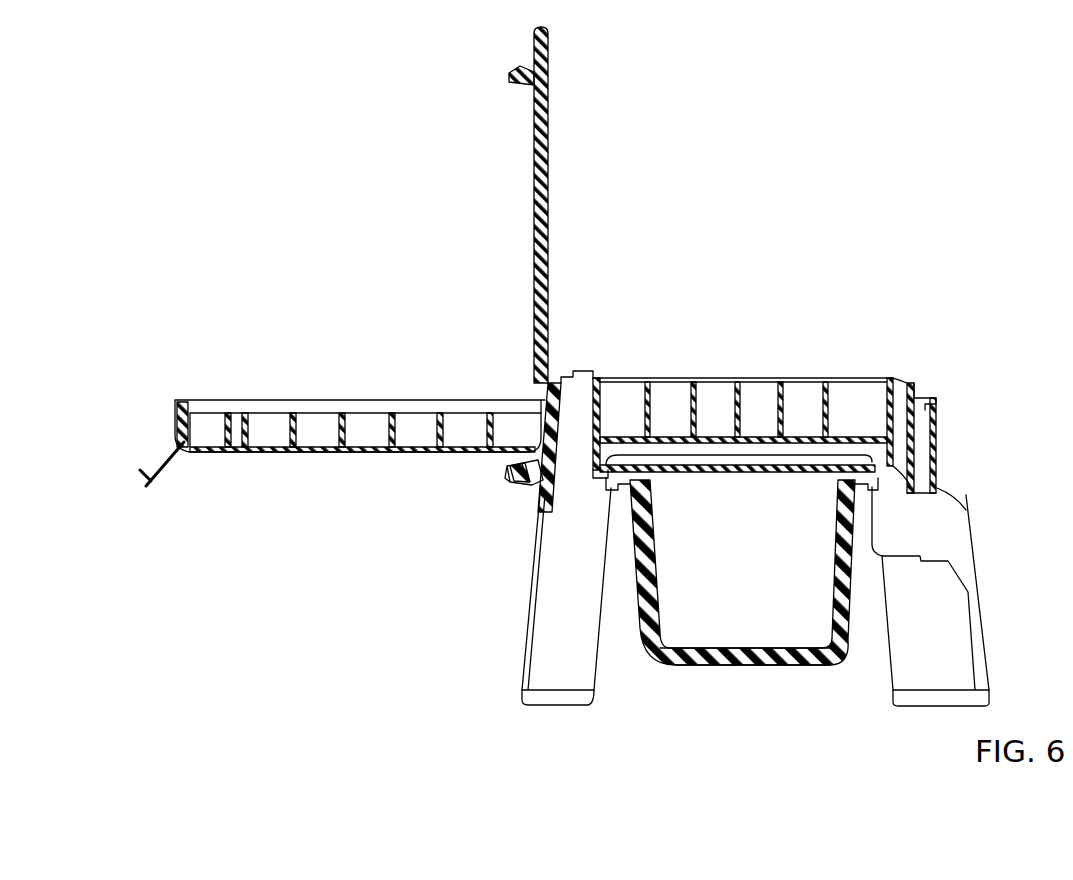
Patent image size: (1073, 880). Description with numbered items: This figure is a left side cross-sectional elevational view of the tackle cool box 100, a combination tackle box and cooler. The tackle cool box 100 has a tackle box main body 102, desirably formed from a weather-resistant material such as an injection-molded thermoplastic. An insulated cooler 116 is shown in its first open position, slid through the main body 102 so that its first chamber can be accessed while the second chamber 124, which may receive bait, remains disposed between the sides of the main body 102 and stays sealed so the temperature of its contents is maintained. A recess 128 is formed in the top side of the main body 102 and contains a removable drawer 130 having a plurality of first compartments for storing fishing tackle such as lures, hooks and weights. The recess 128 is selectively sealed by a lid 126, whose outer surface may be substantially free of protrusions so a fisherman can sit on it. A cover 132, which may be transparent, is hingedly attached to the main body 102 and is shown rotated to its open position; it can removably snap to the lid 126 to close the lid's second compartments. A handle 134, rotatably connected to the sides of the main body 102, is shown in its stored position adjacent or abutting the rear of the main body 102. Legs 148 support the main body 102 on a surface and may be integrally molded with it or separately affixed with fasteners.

The tackle cool box 100 is at (950, 297).
The tackle box main body 102 is at (937, 450).
The cooler 116 is at (751, 672).
The second chamber 124 is at (760, 567).
The lid 126 is at (177, 410).
The recess 128 is at (798, 367).
The removable drawer 130 is at (600, 415).
The cover 132 is at (534, 185).
The handle 134 is at (505, 480).
The legs 148 is at (966, 670).